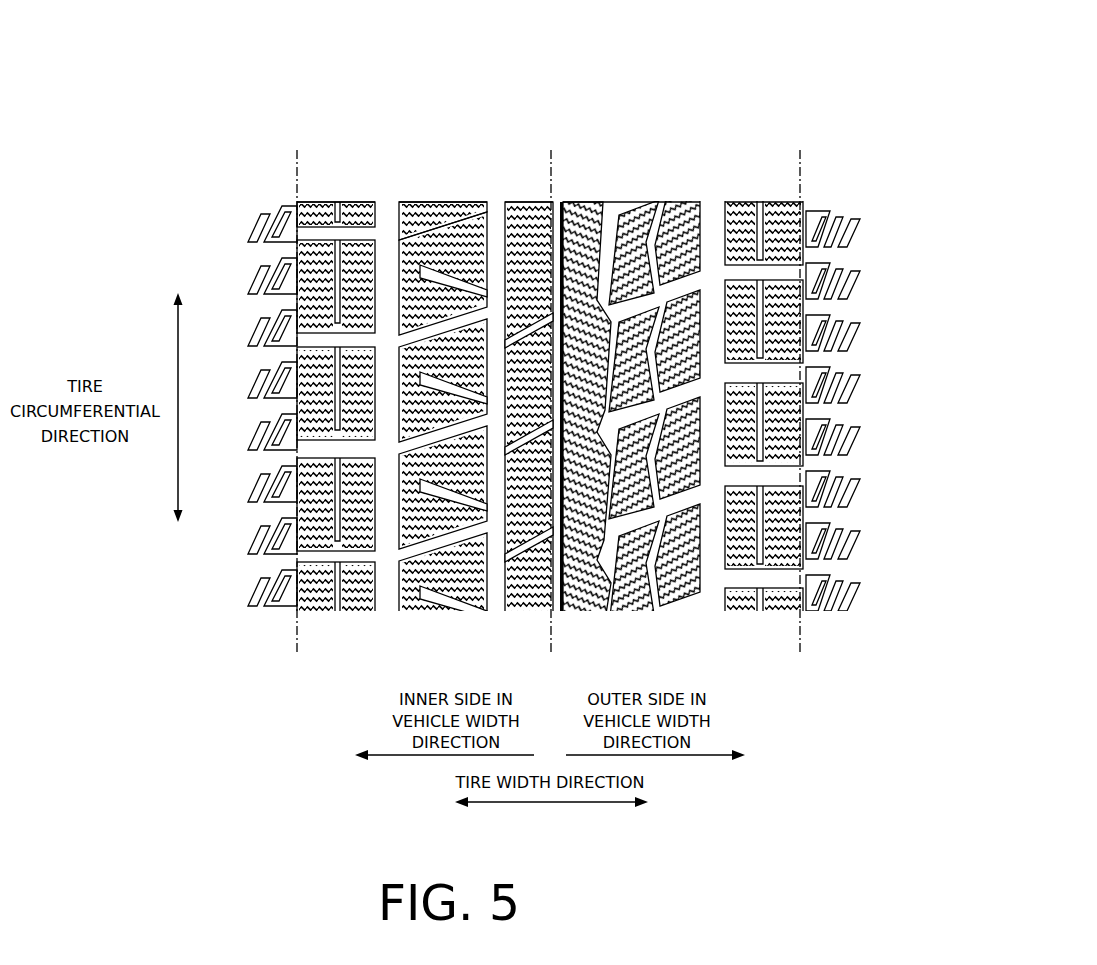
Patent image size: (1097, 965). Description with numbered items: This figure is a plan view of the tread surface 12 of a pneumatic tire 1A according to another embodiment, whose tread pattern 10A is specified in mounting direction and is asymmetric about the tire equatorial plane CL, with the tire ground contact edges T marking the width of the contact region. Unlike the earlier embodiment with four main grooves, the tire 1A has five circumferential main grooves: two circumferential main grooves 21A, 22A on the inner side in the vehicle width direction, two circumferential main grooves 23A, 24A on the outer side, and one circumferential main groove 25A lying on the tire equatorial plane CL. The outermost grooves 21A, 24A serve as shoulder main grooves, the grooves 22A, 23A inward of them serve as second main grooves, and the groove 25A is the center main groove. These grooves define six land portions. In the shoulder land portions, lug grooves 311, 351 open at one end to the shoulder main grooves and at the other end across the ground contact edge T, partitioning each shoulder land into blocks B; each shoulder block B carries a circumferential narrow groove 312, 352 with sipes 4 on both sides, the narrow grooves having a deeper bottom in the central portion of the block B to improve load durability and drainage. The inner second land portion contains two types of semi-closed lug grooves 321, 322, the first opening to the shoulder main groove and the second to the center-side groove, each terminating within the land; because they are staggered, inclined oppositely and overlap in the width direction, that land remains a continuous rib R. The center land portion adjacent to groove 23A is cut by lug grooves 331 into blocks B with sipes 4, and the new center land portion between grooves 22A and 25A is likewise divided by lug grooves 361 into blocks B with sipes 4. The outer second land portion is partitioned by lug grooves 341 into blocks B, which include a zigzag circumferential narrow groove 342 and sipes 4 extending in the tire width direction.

The pneumatic tire 1A is at (724, 47).
The tread pattern 10A is at (668, 89).
The tread surface 12 is at (574, 221).
The sipe 4 is at (428, 300).
The circumferential main groove 21A is at (381, 202).
The circumferential main groove 22A is at (488, 202).
The circumferential main groove 23A is at (636, 202).
The circumferential main groove 24A is at (714, 202).
The circumferential main groove 25A is at (560, 200).
The lug groove 311 is at (341, 462).
The circumferential narrow groove 312 is at (335, 455).
The lug groove 321 is at (402, 470).
The lug groove 322 is at (470, 490).
The lug groove 331 is at (580, 500).
The lug groove 341 is at (645, 520).
The circumferential narrow groove 342 is at (700, 212).
The lug groove 351 is at (752, 500).
The circumferential narrow groove 352 is at (763, 386).
The lug groove 361 is at (526, 500).
The tire ground contact edge T is at (548, 397).
The tire equatorial plane CL is at (549, 397).
The block B is at (498, 580).
The rib R is at (426, 650).